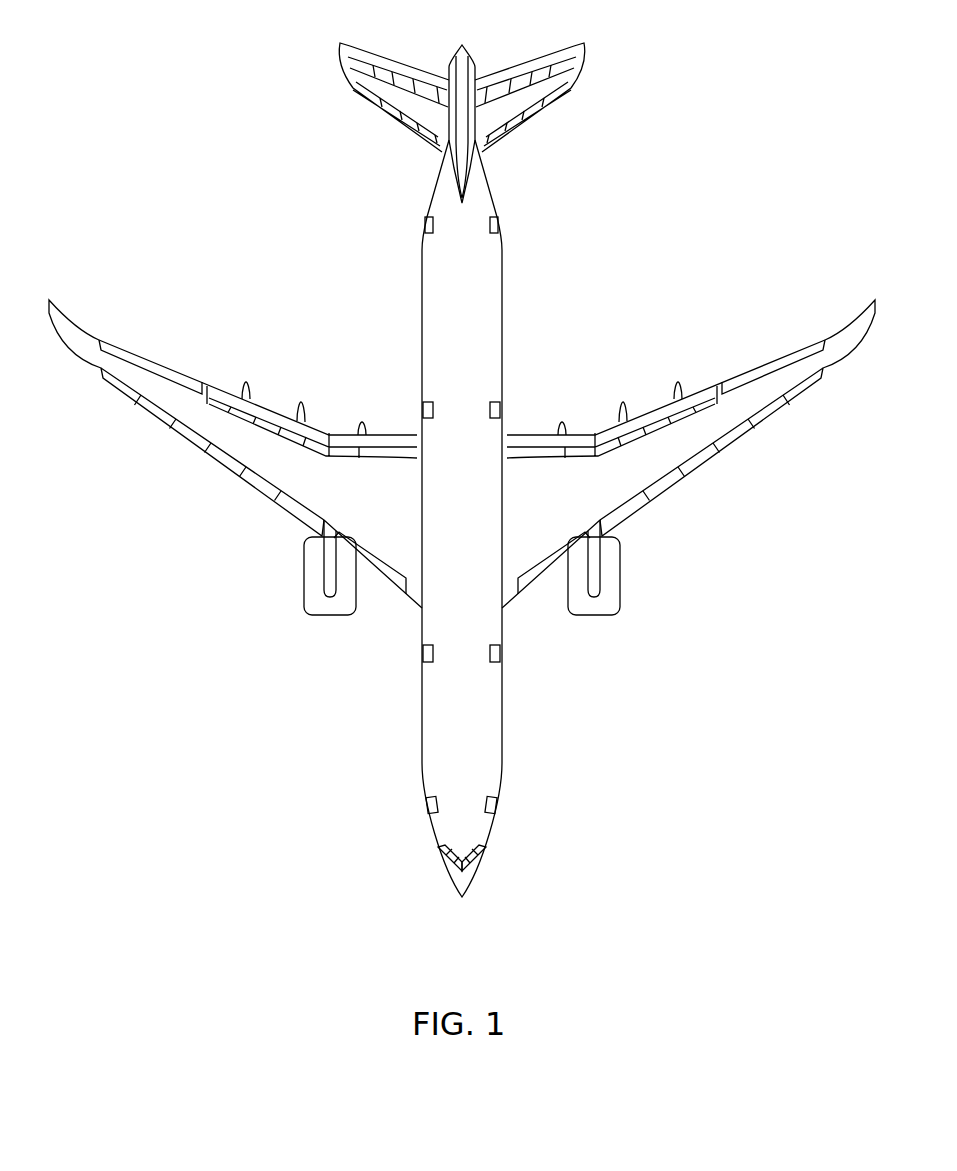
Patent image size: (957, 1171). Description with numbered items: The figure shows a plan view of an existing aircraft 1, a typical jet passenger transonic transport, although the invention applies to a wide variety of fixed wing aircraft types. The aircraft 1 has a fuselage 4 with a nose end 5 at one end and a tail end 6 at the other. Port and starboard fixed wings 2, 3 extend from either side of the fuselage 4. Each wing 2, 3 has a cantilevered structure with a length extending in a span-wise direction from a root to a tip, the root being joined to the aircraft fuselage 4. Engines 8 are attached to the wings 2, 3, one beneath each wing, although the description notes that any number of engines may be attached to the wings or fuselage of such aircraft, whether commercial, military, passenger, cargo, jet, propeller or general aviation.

The aircraft 1 is at (606, 728).
The port fixed wing 2 is at (692, 438).
The starboard fixed wing 3 is at (211, 427).
The fuselage 4 is at (473, 313).
The nose end 5 is at (467, 887).
The tail end 6 is at (470, 63).
The engines 8 is at (607, 597).